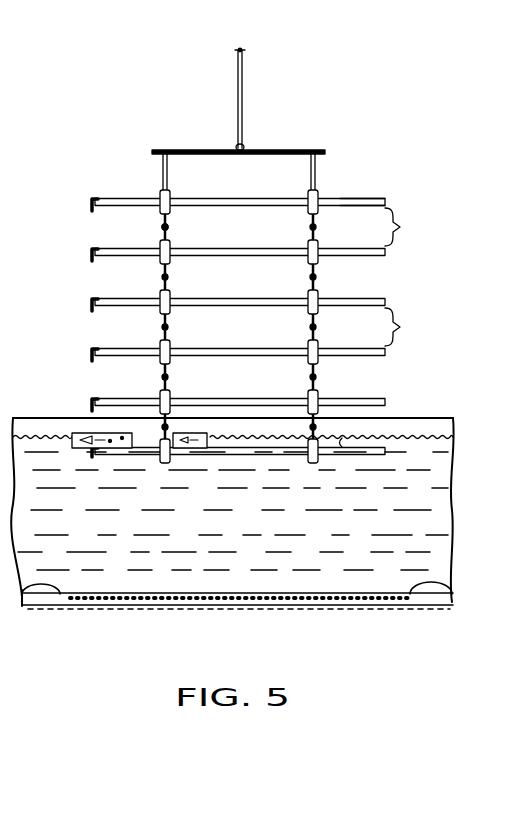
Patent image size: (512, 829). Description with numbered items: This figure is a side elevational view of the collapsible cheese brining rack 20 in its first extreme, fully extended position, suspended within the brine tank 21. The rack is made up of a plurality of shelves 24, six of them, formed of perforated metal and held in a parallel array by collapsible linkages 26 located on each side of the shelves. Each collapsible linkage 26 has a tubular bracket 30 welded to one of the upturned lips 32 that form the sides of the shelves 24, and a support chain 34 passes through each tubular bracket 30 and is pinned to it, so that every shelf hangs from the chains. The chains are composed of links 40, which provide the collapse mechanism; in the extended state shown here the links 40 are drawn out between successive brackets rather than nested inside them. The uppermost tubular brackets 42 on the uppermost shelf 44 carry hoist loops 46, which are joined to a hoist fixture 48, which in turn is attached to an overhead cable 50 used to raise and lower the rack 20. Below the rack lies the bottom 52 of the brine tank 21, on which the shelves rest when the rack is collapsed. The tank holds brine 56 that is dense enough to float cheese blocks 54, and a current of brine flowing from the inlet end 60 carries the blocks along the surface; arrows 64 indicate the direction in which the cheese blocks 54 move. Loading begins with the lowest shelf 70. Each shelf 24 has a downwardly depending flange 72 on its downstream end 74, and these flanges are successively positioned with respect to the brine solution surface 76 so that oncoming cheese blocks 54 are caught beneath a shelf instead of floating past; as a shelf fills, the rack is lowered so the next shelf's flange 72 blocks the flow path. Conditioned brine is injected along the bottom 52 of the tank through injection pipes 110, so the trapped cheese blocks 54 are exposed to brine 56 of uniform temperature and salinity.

The collapsible cheese brining rack 20 is at (253, 111).
The brine tank 21 is at (440, 418).
The shelves 24 is at (372, 447).
The collapsible linkages 26 is at (308, 245).
The tubular bracket 30 is at (172, 297).
The upturned lips 32 is at (234, 400).
The support chain 34 is at (315, 277).
The links 40 is at (170, 228).
The uppermost tubular brackets 42 is at (160, 196).
The uppermost shelf 44 is at (362, 200).
The hoist loops 46 is at (320, 172).
The hoist fixture 48 is at (210, 148).
The overhead cable 50 is at (243, 82).
The bottom of the brine tank 52 is at (22, 600).
The cheese blocks 54 is at (118, 432).
The brine 56 is at (456, 482).
The inlet end 60 is at (458, 420).
The arrows 64 is at (182, 433).
The lowest shelf 70 is at (287, 456).
The downwardly depending flange 72 is at (90, 368).
The downstream end 74 is at (90, 410).
The brine solution surface 76 is at (333, 437).
The injection pipes 110 is at (452, 600).